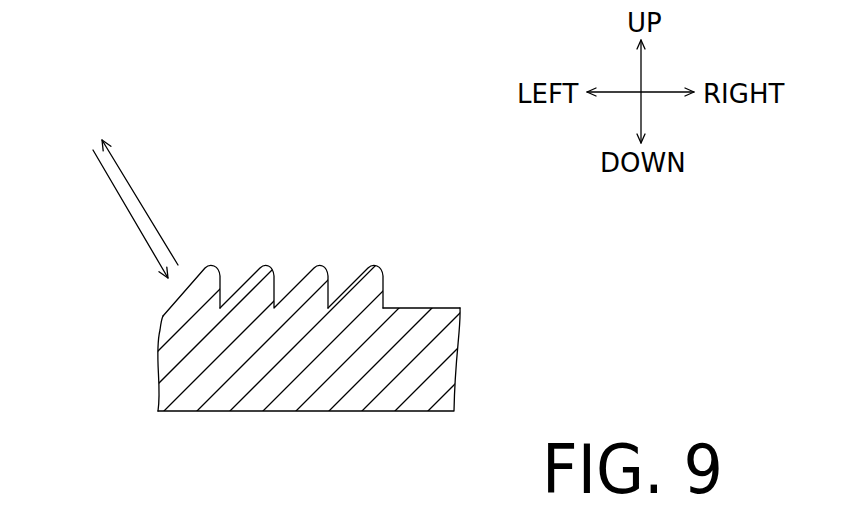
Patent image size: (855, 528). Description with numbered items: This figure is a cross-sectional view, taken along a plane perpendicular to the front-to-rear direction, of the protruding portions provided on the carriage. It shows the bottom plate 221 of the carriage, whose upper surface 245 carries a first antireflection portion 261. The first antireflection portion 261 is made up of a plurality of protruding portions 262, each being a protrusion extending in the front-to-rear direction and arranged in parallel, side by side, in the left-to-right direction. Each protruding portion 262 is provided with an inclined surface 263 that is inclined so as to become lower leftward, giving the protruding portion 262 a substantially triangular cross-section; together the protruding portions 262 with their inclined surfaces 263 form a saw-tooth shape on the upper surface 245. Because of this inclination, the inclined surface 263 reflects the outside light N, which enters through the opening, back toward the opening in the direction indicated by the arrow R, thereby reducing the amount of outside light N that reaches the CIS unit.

The bottom plate 221 is at (260, 393).
The first antireflection portion 261 is at (219, 252).
The protruding portion 262 is at (316, 273).
The inclined surface 263 is at (350, 270).
The upper surface 245 is at (423, 308).
The outside light N is at (111, 182).
The arrow indicating reflection direction R is at (116, 163).